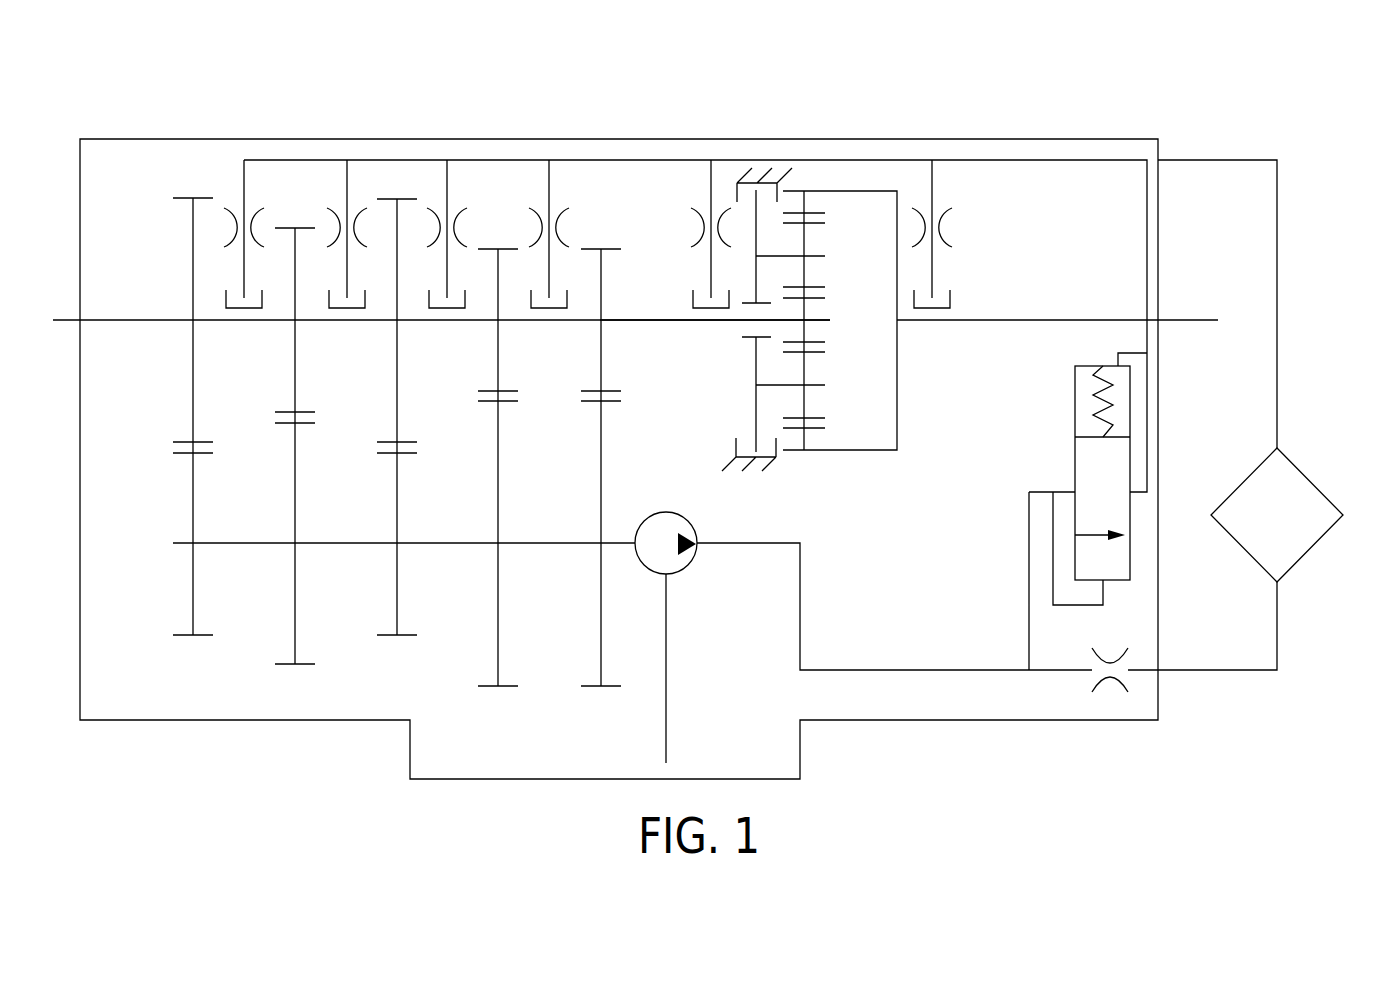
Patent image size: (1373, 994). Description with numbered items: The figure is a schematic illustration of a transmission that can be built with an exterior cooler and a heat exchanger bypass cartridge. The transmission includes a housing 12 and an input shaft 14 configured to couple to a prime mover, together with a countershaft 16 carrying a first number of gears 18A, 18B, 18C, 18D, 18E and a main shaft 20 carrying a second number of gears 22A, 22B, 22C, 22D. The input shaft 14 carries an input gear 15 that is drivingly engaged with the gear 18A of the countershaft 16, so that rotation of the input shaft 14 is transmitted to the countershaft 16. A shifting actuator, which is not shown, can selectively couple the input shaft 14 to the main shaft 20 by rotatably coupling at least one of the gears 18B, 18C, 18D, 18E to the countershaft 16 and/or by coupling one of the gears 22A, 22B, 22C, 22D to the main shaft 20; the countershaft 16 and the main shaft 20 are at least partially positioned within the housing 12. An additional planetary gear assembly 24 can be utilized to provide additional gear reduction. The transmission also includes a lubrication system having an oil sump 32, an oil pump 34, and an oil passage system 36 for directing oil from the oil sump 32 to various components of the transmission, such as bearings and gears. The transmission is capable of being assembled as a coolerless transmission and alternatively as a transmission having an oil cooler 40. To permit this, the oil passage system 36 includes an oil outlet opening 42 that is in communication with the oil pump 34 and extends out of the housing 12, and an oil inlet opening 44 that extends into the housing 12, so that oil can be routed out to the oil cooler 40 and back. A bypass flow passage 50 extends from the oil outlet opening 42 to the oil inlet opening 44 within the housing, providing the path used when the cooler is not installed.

The housing 12 is at (1067, 138).
The input shaft 14 is at (820, 105).
The input gear 15 is at (193, 260).
The countershaft 16 is at (360, 544).
The gear 18A is at (190, 637).
The gear 18B is at (290, 666).
The gear 18C is at (392, 637).
The gear 18D is at (492, 688).
The gear 18E is at (593, 688).
The main shaft 20 is at (650, 321).
The gear 22A is at (295, 368).
The gear 22B is at (397, 348).
The gear 22C is at (498, 355).
The gear 22D is at (601, 343).
The planetary gear assembly 24 is at (860, 170).
The oil sump 32 is at (778, 779).
The oil pump 34 is at (666, 512).
The oil passage system 36 is at (1035, 160).
The oil cooler 40 is at (1300, 470).
The oil outlet opening 42 is at (1160, 670).
The oil inlet opening 44 is at (1160, 160).
The bypass flow passage 50 is at (1147, 343).